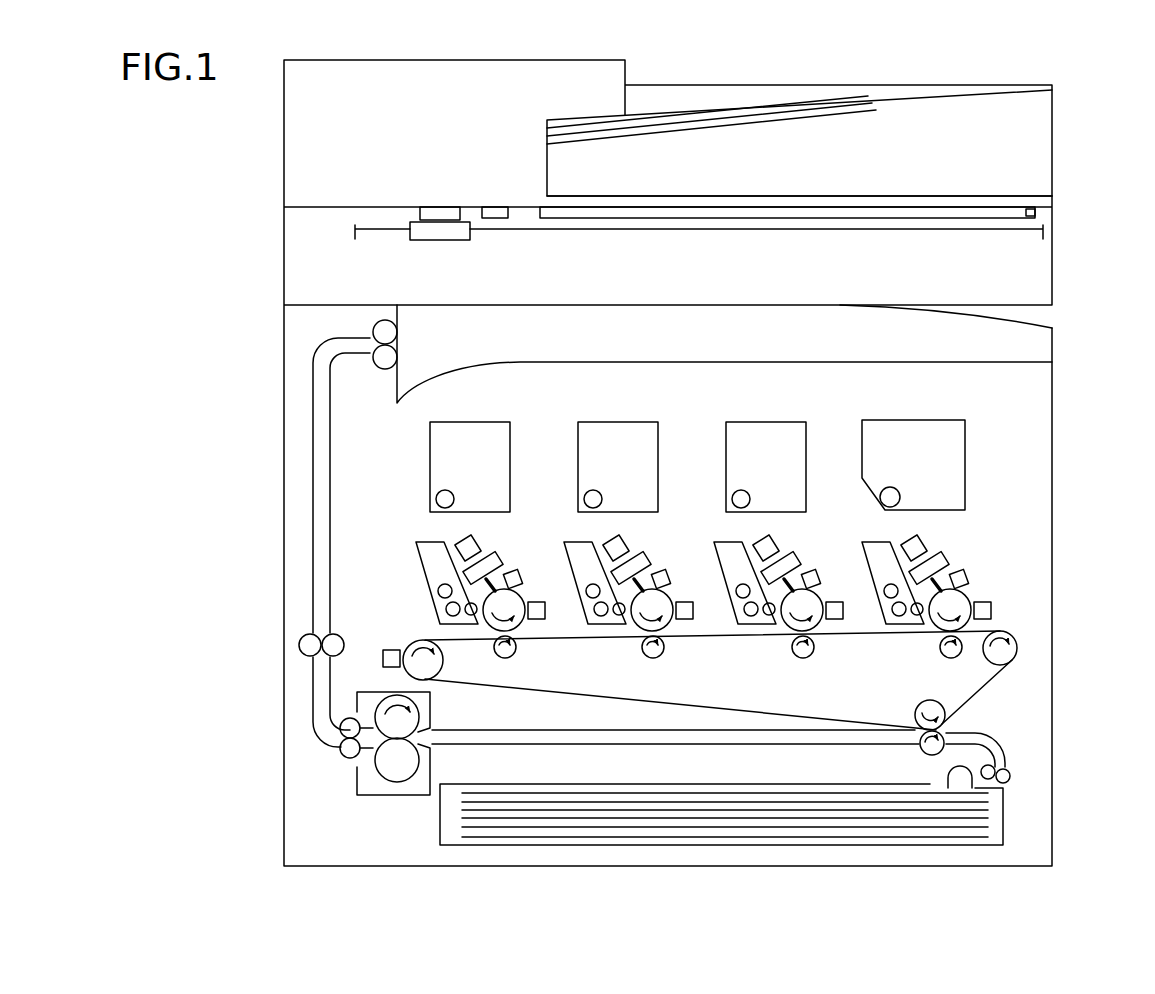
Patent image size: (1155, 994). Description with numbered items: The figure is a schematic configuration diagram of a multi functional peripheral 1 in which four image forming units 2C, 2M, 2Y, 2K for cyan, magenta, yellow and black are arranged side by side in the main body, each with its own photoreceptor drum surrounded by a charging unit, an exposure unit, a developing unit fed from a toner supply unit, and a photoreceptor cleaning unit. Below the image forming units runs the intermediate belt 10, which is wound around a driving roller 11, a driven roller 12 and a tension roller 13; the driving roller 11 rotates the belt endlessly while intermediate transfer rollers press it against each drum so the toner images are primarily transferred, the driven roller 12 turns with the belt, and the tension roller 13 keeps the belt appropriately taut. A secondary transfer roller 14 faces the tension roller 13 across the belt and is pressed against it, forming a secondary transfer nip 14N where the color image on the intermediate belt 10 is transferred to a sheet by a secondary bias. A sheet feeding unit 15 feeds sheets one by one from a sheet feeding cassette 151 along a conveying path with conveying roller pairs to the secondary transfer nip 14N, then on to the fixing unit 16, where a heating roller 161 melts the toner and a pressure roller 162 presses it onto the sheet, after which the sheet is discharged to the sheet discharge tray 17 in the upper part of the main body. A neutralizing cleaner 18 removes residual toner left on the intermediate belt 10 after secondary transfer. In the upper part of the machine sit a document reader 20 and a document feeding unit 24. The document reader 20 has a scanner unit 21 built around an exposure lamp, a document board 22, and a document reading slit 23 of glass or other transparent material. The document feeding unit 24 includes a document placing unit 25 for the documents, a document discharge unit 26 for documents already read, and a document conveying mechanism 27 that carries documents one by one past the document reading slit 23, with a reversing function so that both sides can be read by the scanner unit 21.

The multi functional peripheral 1 is at (1100, 340).
The image forming unit 2C is at (477, 416).
The image forming unit 2M is at (625, 416).
The image forming unit 2Y is at (775, 416).
The image forming unit 2K is at (925, 416).
The intermediate belt 10 is at (986, 689).
The driving roller 11 is at (1018, 648).
The driven roller 12 is at (438, 675).
The tension roller 13 is at (916, 708).
The secondary transfer roller 14 is at (921, 751).
The secondary transfer nip 14N is at (956, 734).
The sheet feeding unit 15 is at (1013, 827).
The fixing unit 16 is at (410, 796).
The sheet discharge tray 17 is at (540, 361).
The neutralizing cleaner 18 is at (393, 650).
The document reader 20 is at (340, 267).
The scanner unit 21 is at (441, 242).
The document board 22 is at (1036, 212).
The document reading slit 23 is at (436, 207).
The document feeding unit 24 is at (722, 86).
The document placing unit 25 is at (897, 97).
The document discharge unit 26 is at (935, 194).
The document conveying mechanism 27 is at (417, 138).
The sheet feeding cassette 151 is at (913, 847).
The heating roller 161 is at (385, 700).
The pressure roller 162 is at (384, 780).